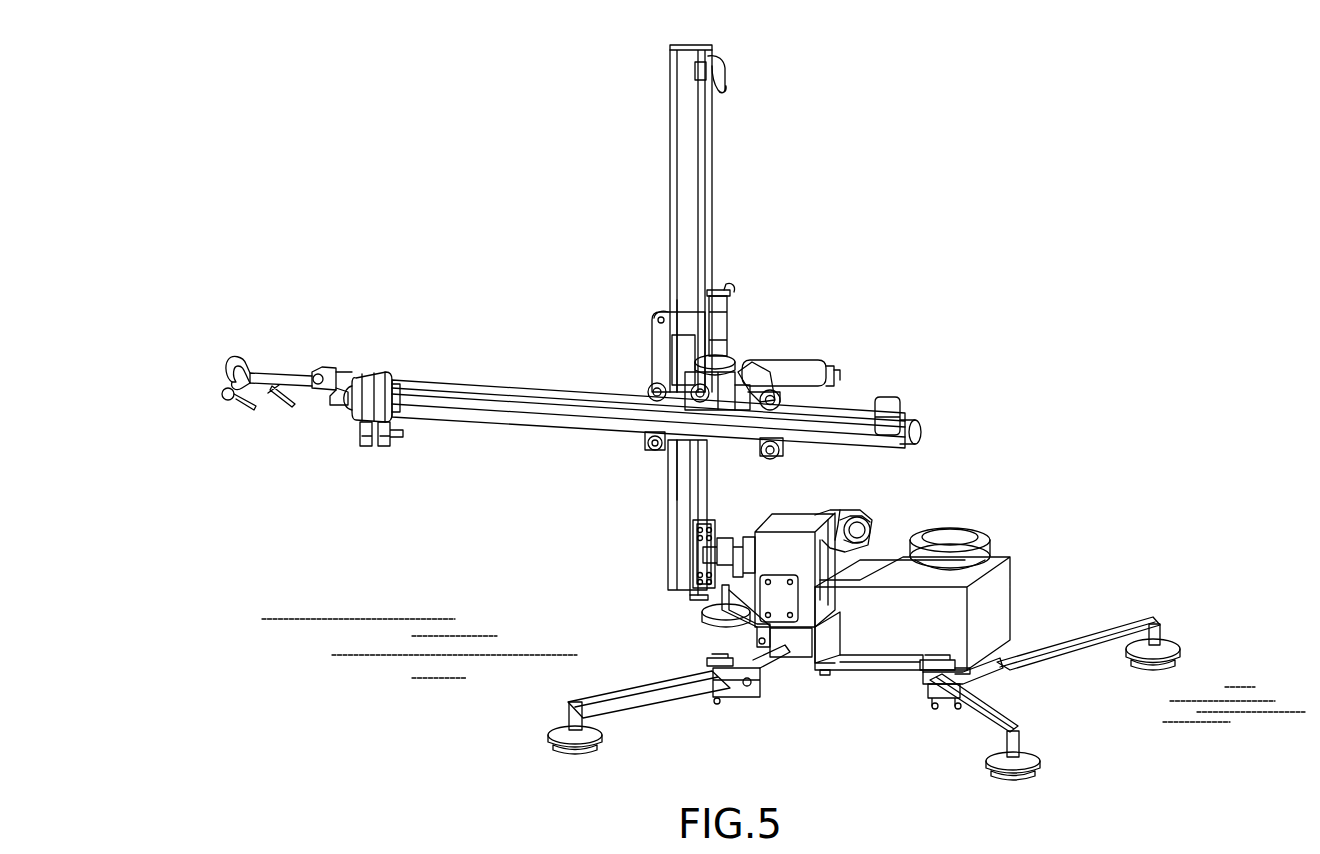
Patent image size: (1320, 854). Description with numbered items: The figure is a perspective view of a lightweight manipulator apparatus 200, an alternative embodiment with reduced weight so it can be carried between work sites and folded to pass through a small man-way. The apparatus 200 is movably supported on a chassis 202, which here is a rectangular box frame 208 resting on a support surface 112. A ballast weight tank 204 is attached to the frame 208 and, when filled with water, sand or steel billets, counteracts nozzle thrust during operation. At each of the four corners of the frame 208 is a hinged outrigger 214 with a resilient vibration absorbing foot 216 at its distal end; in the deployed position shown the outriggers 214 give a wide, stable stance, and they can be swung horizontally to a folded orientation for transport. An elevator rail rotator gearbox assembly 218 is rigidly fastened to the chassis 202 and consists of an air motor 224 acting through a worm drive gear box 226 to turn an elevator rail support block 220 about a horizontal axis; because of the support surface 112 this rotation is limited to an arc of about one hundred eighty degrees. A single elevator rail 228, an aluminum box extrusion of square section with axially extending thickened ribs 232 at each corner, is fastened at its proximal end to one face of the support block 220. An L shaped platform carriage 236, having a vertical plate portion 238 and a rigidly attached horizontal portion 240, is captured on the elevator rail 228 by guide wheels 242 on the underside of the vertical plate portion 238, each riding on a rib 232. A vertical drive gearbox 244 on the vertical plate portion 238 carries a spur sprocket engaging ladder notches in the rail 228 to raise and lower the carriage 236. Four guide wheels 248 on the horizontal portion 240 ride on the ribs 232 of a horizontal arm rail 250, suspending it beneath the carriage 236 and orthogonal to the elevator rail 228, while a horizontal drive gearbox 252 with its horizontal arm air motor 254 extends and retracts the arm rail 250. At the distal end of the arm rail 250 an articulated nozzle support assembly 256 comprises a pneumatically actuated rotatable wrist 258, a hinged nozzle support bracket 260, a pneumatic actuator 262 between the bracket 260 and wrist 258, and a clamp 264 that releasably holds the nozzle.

The lightweight manipulator apparatus 200 is at (1032, 243).
The chassis 202 is at (1042, 616).
The ballast weight tank 204 is at (1012, 580).
The rectangular box frame 208 is at (862, 680).
The support surface 112 is at (1306, 706).
The hinged outrigger 214 is at (1108, 625).
The resilient vibration absorbing foot 216 is at (1168, 640).
The elevator rail rotator gearbox assembly 218 is at (862, 522).
The elevator rail support block 220 is at (722, 545).
The air motor 224 is at (870, 532).
The worm drive gear box 226 is at (838, 520).
The elevator rail 228 is at (667, 520).
The thickened ribs 232 is at (510, 385).
The L shaped platform carriage 236 is at (642, 386).
The vertical plate portion 238 is at (652, 346).
The horizontal portion 240 is at (762, 370).
The guide wheels 242 is at (660, 320).
The vertical drive gearbox 244 is at (726, 352).
The guide wheels 248 is at (786, 404).
The horizontal arm rail 250 is at (488, 432).
The horizontal drive gearbox 252 is at (686, 398).
The horizontal arm air motor 254 is at (812, 362).
The articulated nozzle support assembly 256 is at (378, 352).
The rotatable wrist 258 is at (388, 376).
The hinged nozzle support bracket 260 is at (330, 370).
The pneumatic actuator 262 is at (272, 402).
The clamp 264 is at (235, 355).